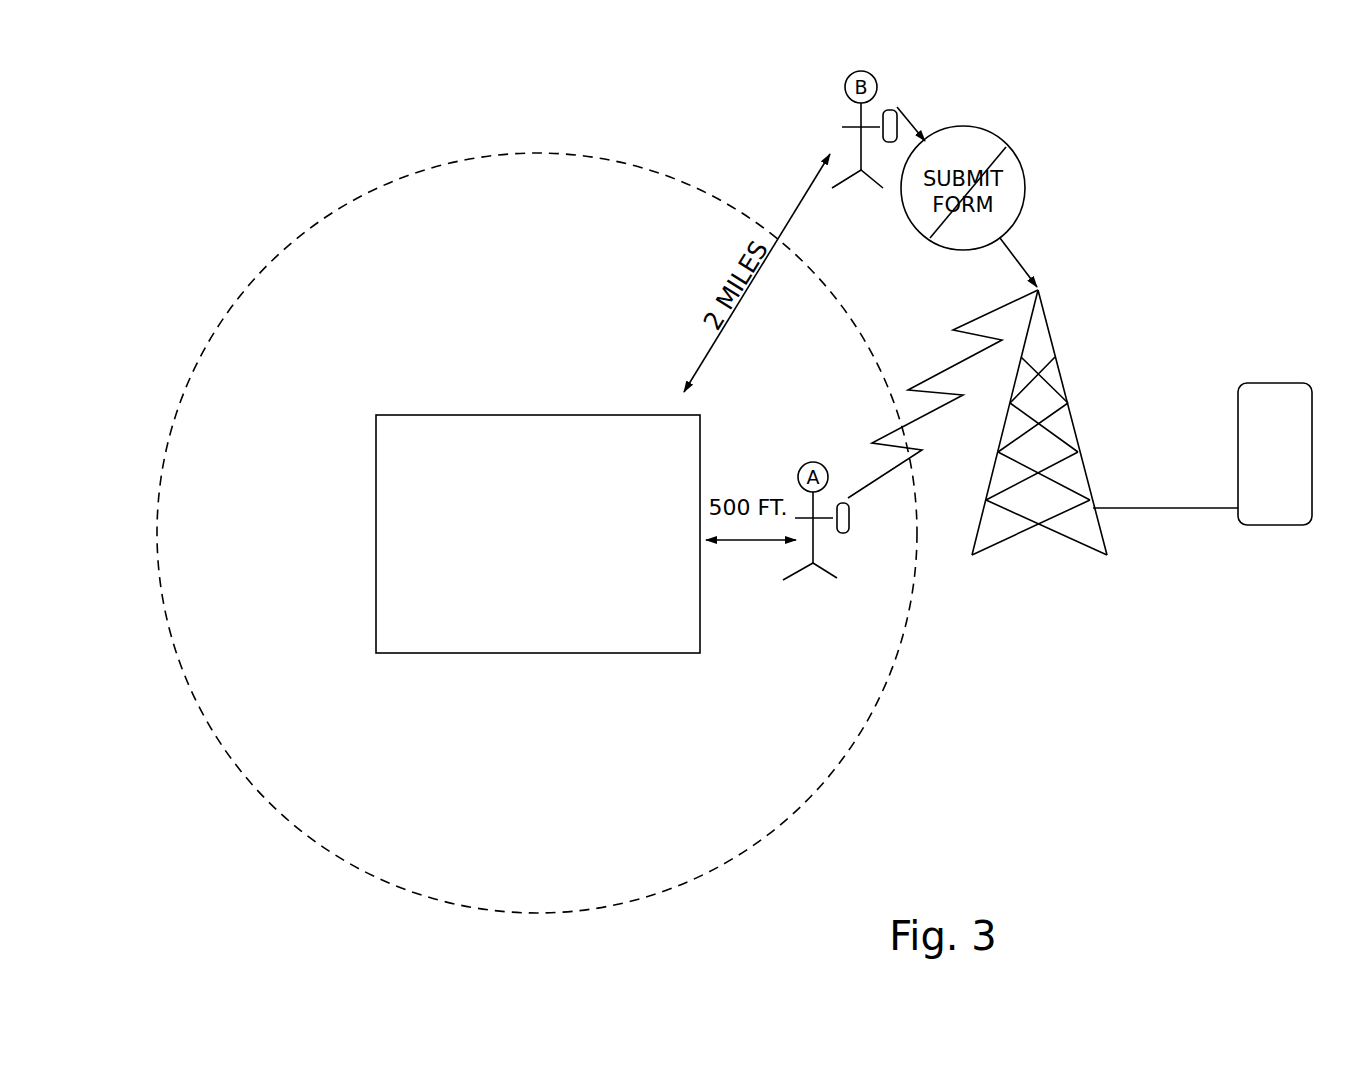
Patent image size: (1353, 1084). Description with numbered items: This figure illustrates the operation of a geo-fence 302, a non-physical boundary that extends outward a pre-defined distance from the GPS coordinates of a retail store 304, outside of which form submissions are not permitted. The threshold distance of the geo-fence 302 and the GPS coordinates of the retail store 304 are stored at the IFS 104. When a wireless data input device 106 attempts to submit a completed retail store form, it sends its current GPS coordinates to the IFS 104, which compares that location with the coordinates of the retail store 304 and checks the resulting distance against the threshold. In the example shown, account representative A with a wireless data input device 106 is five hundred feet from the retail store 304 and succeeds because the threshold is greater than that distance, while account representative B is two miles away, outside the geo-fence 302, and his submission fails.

The geo-fence 302 is at (318, 222).
The retail store 304 is at (430, 420).
The wireless data input device 106 is at (895, 110).
The IFS 104 is at (1240, 517).